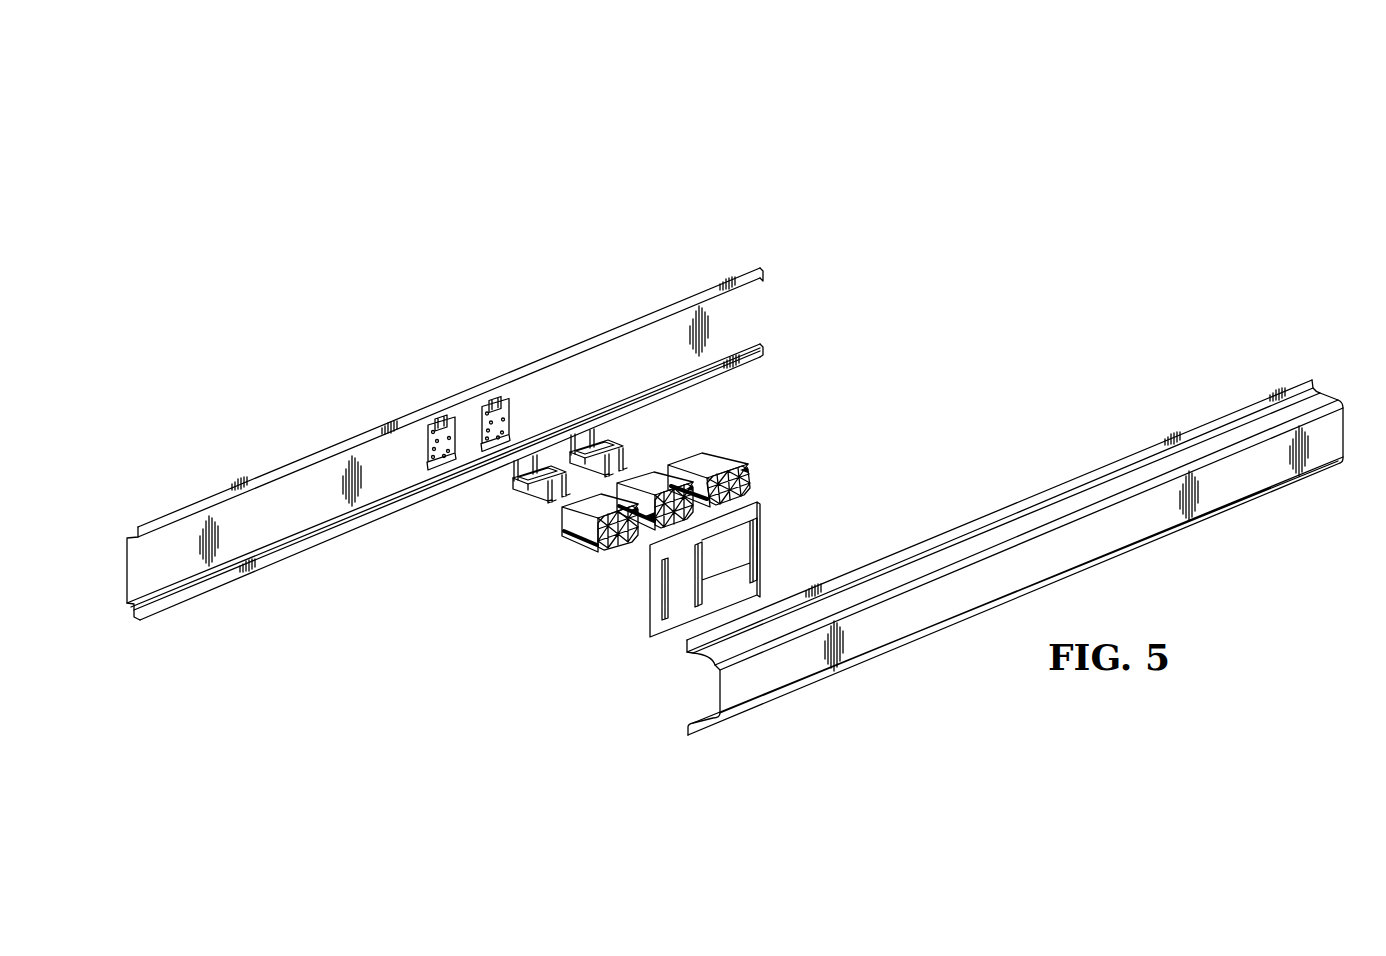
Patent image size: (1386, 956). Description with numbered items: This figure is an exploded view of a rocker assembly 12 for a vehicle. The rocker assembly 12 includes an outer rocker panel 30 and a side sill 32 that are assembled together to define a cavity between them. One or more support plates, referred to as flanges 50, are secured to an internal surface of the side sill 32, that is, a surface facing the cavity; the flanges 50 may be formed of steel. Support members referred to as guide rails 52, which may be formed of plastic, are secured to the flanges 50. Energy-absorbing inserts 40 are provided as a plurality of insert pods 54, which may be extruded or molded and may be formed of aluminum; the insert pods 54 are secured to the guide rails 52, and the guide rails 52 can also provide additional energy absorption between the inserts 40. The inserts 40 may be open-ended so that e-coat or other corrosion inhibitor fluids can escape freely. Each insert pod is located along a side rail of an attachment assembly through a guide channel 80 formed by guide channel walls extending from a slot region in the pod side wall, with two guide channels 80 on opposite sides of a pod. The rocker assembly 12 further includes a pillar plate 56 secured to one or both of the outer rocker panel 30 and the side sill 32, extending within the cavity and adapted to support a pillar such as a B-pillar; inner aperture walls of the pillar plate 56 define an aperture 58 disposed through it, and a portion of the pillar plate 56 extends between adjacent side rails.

The rocker assembly 12 is at (1012, 243).
The outer rocker panel 30 is at (1012, 502).
The side sill 32 is at (556, 352).
The inserts 40 is at (659, 526).
The flanges 50 is at (437, 417).
The guide rails 52 is at (610, 447).
The insert pods 54 is at (664, 478).
The pillar plate 56 is at (757, 505).
The aperture 58 is at (725, 553).
The guide channel 80 is at (577, 537).